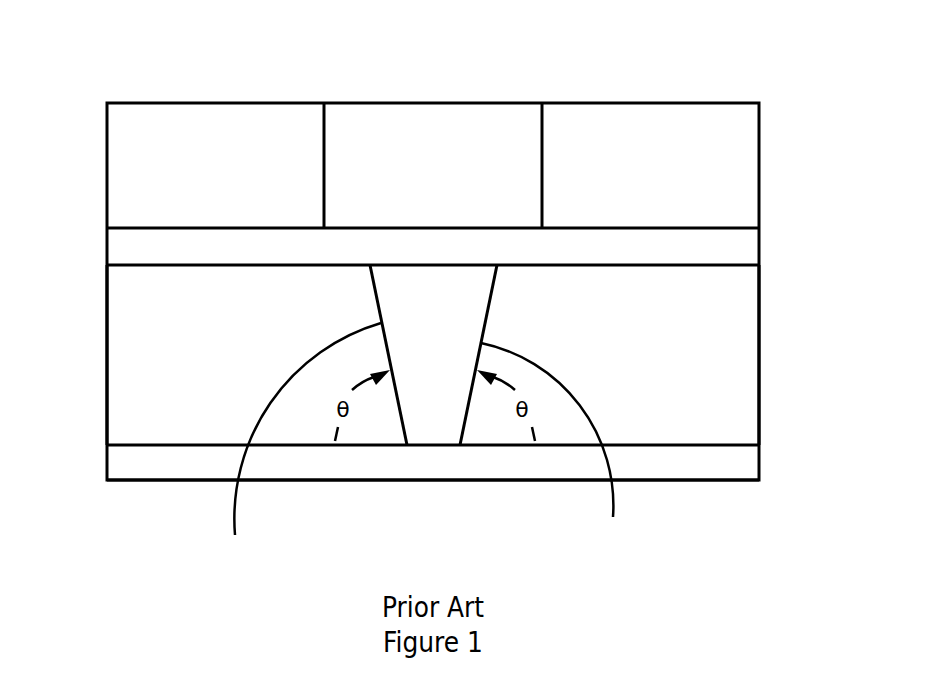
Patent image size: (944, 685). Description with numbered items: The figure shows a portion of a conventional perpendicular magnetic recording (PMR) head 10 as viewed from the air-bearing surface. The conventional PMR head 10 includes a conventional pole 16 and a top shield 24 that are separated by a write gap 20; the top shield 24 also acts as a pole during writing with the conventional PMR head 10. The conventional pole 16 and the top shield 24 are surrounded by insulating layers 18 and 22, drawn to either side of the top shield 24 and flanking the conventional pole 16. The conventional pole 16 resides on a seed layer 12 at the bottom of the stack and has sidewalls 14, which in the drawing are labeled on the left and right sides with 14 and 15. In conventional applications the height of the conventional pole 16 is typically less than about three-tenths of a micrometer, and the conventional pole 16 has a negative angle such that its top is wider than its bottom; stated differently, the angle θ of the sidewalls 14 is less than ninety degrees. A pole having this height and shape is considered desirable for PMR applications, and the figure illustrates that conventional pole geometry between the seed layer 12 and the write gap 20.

The conventional perpendicular magnetic recording (PMR) head 10 is at (420, 42).
The seed layer 12 is at (107, 463).
The sidewalls 14 is at (300, 444).
The right curved plating profile 15 is at (556, 446).
The conventional pole 16 is at (368, 498).
The insulating layer 18 is at (107, 366).
The write gap 20 is at (107, 246).
The insulating layer 22 is at (107, 105).
The top shield 24 is at (452, 103).